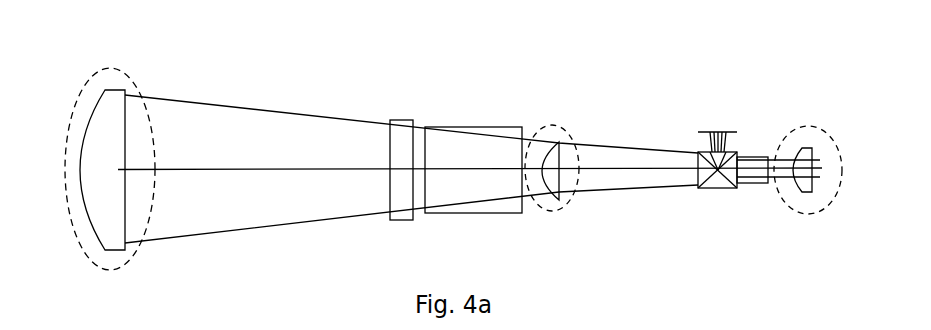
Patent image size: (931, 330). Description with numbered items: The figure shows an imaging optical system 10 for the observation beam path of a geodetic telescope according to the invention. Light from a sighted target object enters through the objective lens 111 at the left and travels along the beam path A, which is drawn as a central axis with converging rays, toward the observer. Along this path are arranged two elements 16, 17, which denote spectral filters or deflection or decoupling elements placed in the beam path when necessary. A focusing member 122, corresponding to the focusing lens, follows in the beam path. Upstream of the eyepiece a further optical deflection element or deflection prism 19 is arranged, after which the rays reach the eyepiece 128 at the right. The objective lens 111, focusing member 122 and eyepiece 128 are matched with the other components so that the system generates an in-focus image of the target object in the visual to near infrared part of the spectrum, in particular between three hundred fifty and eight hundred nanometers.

The optical system 10 is at (498, 44).
The objective lens 111 is at (143, 70).
The beam path A is at (217, 168).
The spectral filter or deflection or decoupling element 16 is at (405, 123).
The spectral filter or deflection or decoupling element 17 is at (493, 132).
The focusing member 122 is at (576, 122).
The deflection prism 19 is at (714, 191).
The eyepiece 128 is at (795, 118).